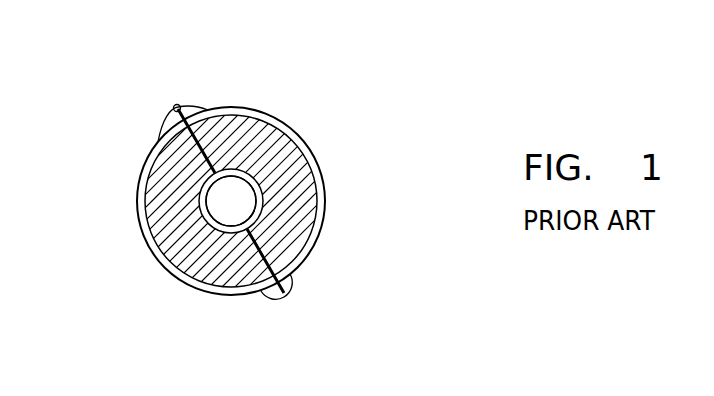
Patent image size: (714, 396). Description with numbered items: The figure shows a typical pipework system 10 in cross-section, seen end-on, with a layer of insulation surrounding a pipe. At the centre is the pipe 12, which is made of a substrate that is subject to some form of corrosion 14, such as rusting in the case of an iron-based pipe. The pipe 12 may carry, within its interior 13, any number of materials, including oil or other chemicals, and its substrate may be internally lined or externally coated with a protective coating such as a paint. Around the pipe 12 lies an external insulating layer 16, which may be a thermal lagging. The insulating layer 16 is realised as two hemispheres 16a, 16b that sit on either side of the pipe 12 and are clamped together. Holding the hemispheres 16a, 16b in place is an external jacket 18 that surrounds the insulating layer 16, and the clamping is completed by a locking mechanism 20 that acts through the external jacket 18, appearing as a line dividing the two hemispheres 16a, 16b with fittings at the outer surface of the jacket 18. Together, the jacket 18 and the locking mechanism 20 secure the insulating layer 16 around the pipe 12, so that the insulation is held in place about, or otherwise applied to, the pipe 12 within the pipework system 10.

The pipework system 10 is at (78, 72).
The pipe 12 is at (203, 233).
The interior 13 is at (238, 200).
The corrosion 14 is at (245, 178).
The external insulating layer 16 is at (232, 201).
The hemisphere 16a is at (163, 220).
The hemisphere 16b is at (297, 182).
The external jacket 18 is at (308, 138).
The locking mechanism 20 is at (190, 103).